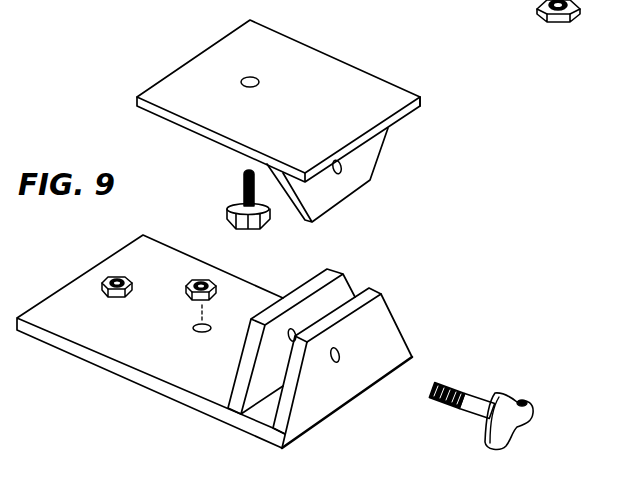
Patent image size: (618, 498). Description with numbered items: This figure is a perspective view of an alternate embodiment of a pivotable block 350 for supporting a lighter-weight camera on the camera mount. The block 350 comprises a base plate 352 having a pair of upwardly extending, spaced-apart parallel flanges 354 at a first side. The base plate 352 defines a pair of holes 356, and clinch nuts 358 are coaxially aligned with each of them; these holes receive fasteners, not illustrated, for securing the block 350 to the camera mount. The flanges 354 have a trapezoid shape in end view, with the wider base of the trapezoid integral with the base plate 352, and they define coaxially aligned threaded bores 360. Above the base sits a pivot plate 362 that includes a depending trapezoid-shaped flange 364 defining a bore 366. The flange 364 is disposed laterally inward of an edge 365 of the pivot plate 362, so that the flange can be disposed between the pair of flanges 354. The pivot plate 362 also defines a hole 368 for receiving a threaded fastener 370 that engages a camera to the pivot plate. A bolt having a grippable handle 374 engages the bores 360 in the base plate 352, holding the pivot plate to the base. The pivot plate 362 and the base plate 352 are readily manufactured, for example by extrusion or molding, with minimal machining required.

The pivotable block 350 is at (445, 162).
The base plate 352 is at (181, 377).
The flanges 354 is at (330, 292).
The holes 356 is at (194, 327).
The clinch nuts 358 is at (117, 299).
The threaded bores 360 is at (293, 330).
The pivot plate 362 is at (333, 65).
The flange 364 is at (370, 145).
The edge 365 is at (421, 100).
The bore 366 is at (344, 168).
The hole 368 is at (251, 76).
The threaded fastener 370 is at (238, 207).
The grippable handle 374 is at (480, 407).